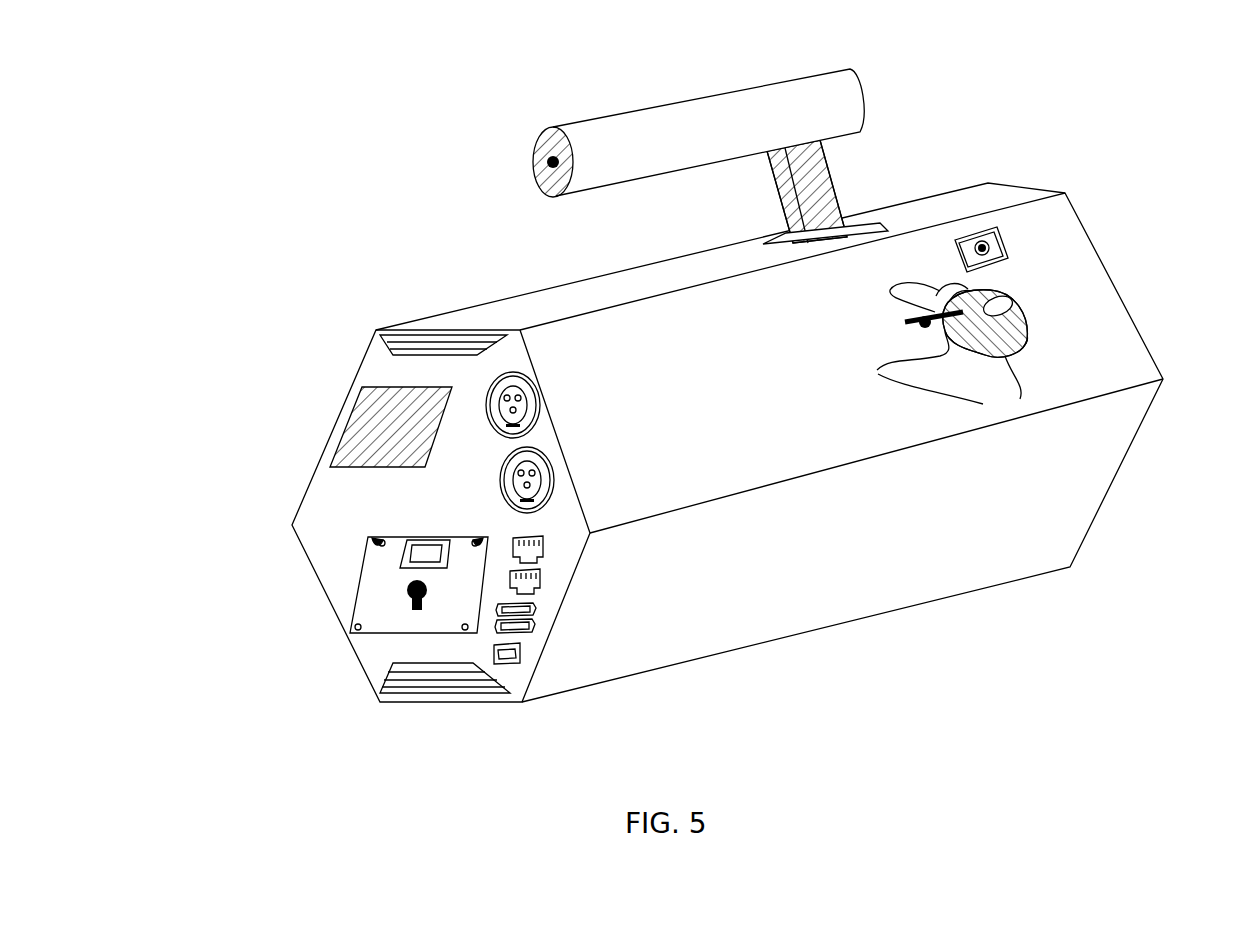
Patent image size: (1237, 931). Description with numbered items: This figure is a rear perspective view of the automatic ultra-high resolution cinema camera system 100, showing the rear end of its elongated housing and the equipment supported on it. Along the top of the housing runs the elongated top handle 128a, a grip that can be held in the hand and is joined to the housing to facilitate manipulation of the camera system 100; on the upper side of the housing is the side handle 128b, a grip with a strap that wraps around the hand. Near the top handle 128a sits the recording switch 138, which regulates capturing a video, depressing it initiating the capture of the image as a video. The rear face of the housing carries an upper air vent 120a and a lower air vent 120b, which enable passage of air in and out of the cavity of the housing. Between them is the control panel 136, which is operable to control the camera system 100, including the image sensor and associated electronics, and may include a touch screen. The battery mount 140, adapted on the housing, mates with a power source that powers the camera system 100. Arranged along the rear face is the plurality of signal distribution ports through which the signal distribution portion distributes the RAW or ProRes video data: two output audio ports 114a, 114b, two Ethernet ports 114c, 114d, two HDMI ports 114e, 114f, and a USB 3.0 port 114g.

The ultra-high resolution cinema camera system 100 is at (272, 154).
The top handle 128a is at (632, 118).
The recording switch 138 is at (970, 229).
The side handle 128b is at (1027, 323).
The air vent 120a is at (372, 347).
The control panel 136 is at (360, 412).
The output audio port 114a is at (532, 398).
The output audio port 114b is at (547, 473).
The Ethernet port 114c is at (547, 552).
The Ethernet port 114d is at (540, 582).
The HDMI port 114e is at (530, 608).
The HDMI port 114f is at (533, 625).
The USB 3.0 port 114g is at (520, 656).
The battery mount 140 is at (398, 610).
The air vent 120b is at (432, 684).